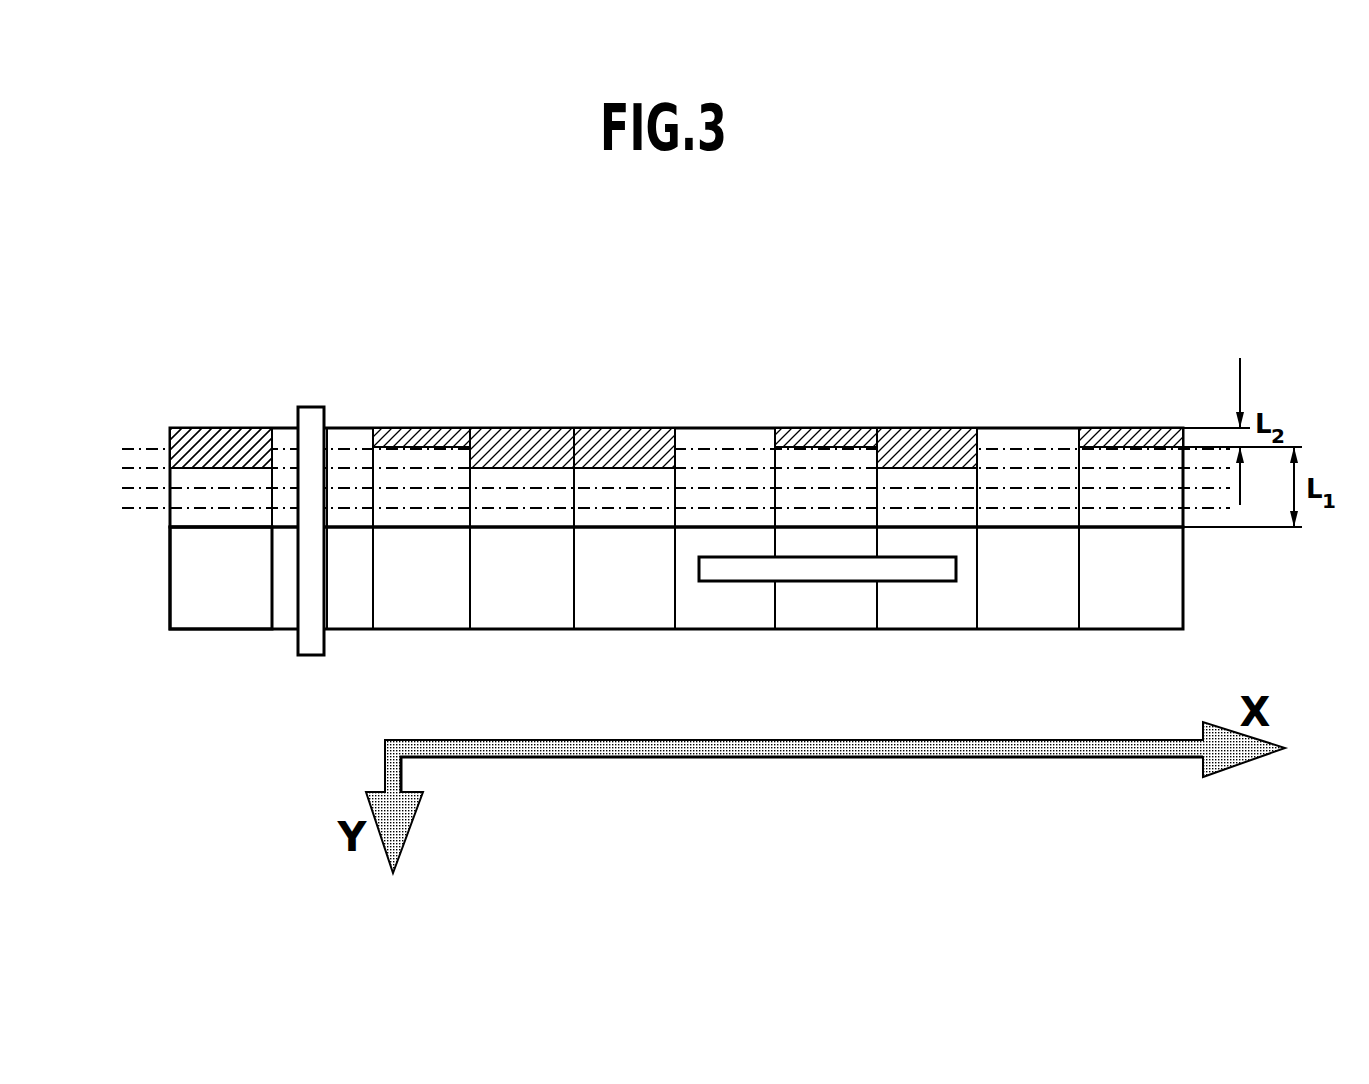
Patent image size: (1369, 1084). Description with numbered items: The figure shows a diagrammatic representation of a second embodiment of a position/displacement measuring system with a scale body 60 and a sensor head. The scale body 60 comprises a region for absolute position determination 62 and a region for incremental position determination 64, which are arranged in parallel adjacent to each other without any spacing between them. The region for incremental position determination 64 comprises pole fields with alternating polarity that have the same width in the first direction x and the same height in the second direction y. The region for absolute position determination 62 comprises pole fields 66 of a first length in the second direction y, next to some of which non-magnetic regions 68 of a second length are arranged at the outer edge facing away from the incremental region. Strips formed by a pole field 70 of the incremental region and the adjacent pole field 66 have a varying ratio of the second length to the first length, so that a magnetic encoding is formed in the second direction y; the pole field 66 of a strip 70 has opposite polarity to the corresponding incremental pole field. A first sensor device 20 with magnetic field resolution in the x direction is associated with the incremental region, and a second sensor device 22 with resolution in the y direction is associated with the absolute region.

The first sensor device 20 is at (862, 573).
The second sensor device 22 is at (312, 420).
The scale body 60 is at (643, 508).
The region for absolute position determination 62 is at (619, 437).
The region for incremental position determination 64 is at (619, 613).
The pole field 66 is at (247, 428).
The non-magnetic region 68 is at (197, 453).
The pole field of the incremental region forming a strip 70 is at (229, 615).